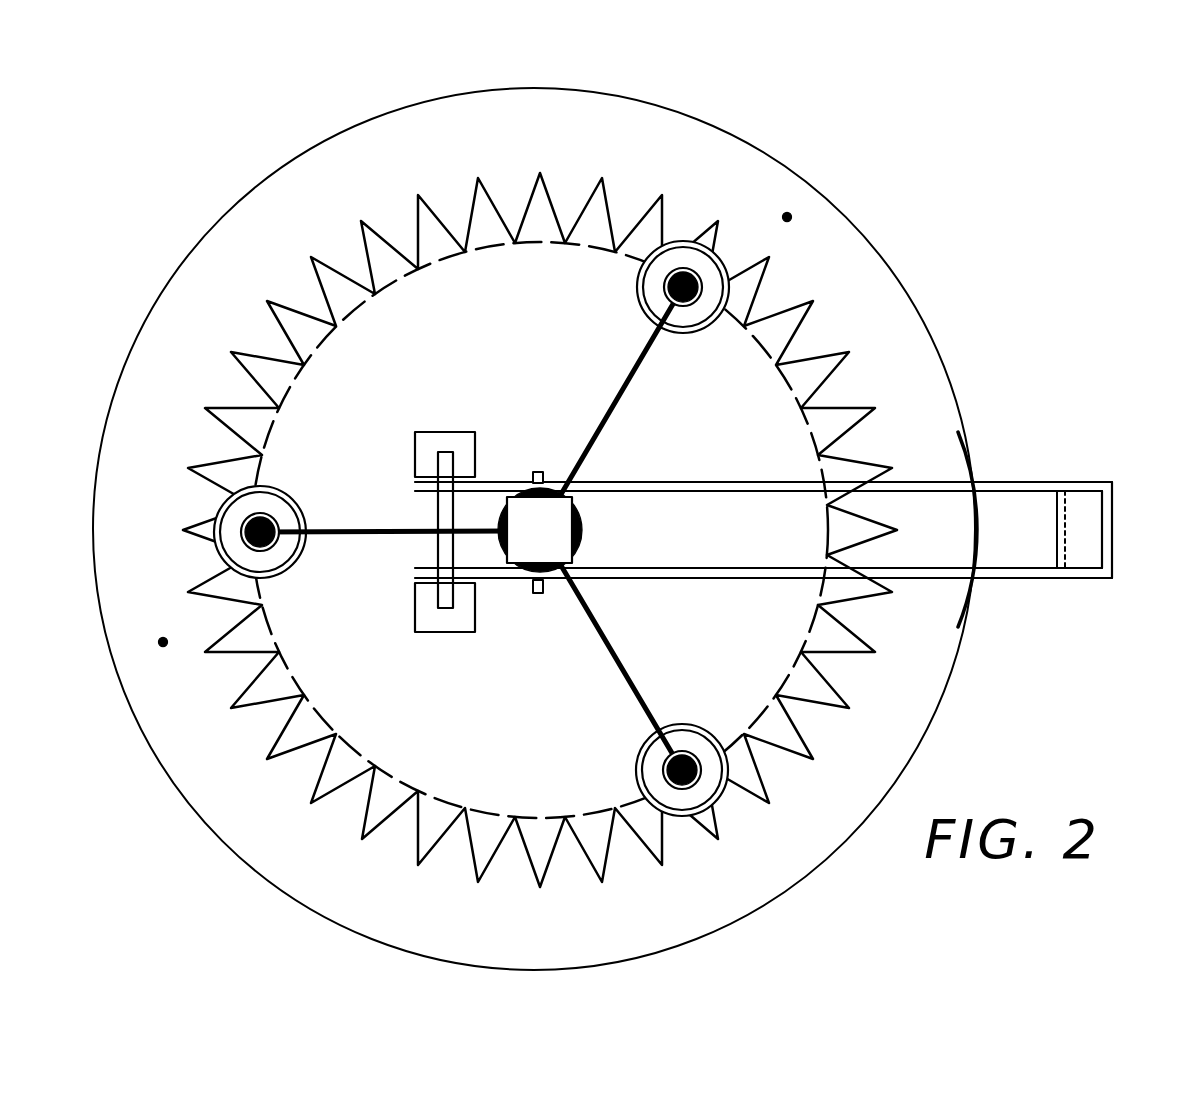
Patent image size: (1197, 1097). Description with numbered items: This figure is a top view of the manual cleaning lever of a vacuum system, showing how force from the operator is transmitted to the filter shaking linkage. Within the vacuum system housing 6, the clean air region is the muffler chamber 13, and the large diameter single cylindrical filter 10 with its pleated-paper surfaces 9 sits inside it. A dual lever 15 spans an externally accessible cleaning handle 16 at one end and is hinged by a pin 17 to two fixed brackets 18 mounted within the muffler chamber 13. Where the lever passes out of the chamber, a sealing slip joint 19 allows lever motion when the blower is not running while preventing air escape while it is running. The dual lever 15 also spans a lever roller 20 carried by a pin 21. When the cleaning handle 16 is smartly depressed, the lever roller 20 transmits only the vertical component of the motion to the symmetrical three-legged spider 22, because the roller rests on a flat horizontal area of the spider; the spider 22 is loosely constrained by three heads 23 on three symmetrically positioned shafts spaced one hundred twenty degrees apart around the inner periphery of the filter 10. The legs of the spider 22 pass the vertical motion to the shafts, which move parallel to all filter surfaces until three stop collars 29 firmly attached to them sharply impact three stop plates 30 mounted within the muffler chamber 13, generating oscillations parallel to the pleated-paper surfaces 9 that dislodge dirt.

The vacuum system housing 6 is at (903, 282).
The pleated-paper surfaces 9 is at (250, 740).
The large diameter single cylindrical filter 10 is at (790, 405).
The muffler chamber 13 is at (787, 217).
The dual lever 15 is at (735, 492).
The cleaning handle 16 is at (1112, 535).
The pin 17 is at (436, 547).
The fixed brackets 18 is at (415, 475).
The sealing slip joint 19 is at (965, 505).
The lever roller 20 is at (572, 560).
The pin 21 is at (538, 470).
The symmetrical three-legged spider 22 is at (618, 388).
The heads 23 is at (695, 305).
The stop collars 29 is at (637, 282).
The stop plates 30 is at (668, 318).